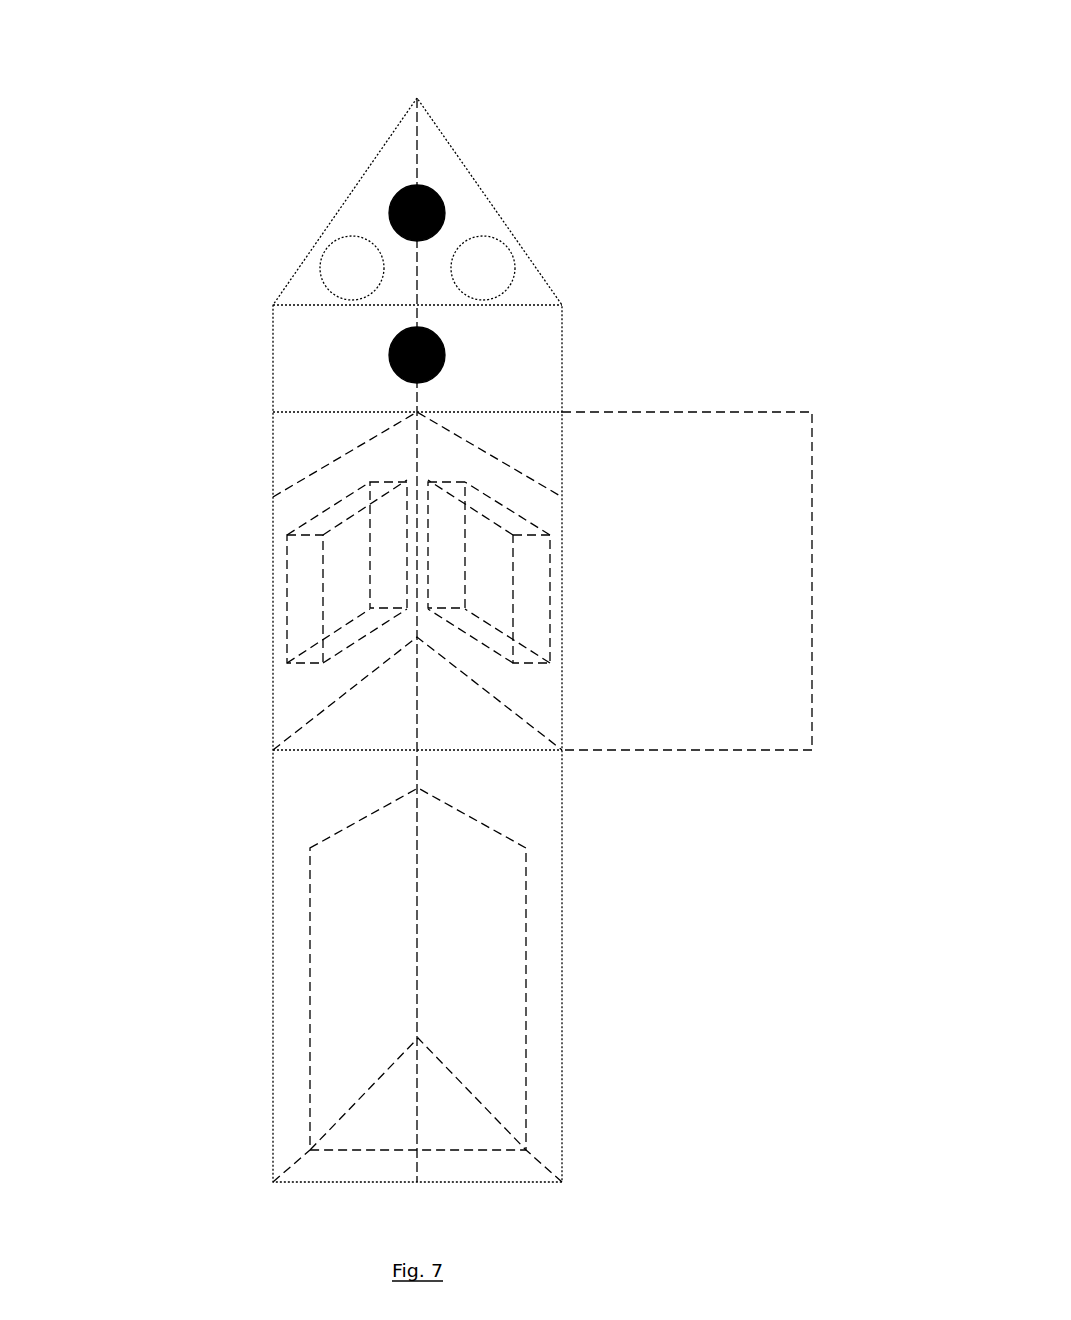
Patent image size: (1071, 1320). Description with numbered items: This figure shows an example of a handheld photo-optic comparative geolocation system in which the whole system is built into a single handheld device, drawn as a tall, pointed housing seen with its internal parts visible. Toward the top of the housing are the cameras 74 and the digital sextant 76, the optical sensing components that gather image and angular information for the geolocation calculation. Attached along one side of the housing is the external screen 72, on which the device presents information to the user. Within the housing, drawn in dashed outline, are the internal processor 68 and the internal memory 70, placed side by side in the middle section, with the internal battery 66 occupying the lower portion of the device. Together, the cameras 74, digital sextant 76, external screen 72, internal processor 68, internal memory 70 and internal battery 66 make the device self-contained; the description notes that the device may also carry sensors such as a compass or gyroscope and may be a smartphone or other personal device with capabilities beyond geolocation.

The internal battery 66 is at (454, 808).
The internal processor 68 is at (287, 568).
The internal memory 70 is at (550, 563).
The external screen 72 is at (812, 465).
The cameras 74 is at (453, 273).
The digital sextant 76 is at (443, 203).